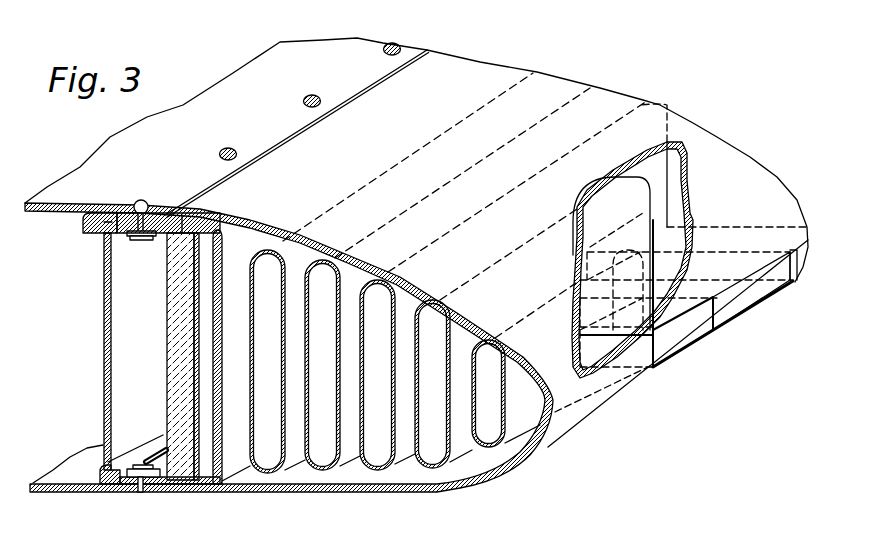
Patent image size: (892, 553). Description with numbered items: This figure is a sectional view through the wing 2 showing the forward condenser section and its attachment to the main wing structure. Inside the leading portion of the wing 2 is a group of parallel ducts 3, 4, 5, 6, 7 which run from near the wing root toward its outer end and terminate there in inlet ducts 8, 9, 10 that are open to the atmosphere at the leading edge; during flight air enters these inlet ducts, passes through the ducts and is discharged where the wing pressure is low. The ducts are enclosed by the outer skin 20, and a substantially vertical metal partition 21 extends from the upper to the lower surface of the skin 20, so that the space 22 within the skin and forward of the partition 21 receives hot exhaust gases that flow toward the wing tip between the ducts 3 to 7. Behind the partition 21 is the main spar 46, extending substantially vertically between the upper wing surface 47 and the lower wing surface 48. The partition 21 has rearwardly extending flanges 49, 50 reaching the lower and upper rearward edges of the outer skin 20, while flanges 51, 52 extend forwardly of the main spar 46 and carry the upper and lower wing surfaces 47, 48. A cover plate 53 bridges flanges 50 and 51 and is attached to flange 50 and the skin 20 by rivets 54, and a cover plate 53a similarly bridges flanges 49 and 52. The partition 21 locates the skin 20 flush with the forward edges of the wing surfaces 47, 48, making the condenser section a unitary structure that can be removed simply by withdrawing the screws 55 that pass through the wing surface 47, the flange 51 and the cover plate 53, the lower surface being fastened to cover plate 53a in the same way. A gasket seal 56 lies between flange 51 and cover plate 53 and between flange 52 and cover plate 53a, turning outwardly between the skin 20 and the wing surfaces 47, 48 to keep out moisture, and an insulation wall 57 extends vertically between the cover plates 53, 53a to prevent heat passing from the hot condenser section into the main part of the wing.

The wing 2 is at (466, 52).
The duct 3 is at (488, 393).
The duct 4 is at (432, 384).
The duct 5 is at (377, 375).
The duct 6 is at (322, 365).
The duct 7 is at (267, 361).
The inlet duct 8 is at (688, 335).
The inlet duct 9 is at (753, 298).
The inlet duct 10 is at (798, 266).
The outer skin 20 is at (265, 228).
The metal partition 21 is at (218, 323).
The space 22 is at (408, 473).
The main spar 46 is at (102, 330).
The upper wing surface 47 is at (82, 230).
The lower wing surface 48 is at (63, 483).
The flange 49 is at (175, 487).
The flange 50 is at (200, 214).
The flange 51 is at (110, 213).
The flange 52 is at (110, 489).
The cover plate 53 is at (203, 233).
The cover plate 53a is at (158, 452).
The rivets 54 is at (182, 215).
The screws 55 is at (303, 103).
The gasket seal 56 is at (347, 99).
The insulation wall 57 is at (165, 348).